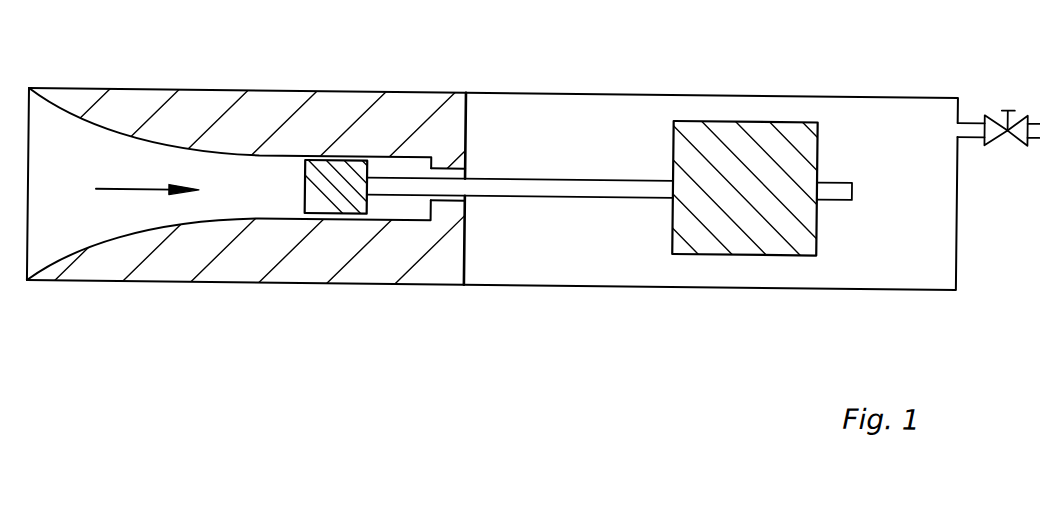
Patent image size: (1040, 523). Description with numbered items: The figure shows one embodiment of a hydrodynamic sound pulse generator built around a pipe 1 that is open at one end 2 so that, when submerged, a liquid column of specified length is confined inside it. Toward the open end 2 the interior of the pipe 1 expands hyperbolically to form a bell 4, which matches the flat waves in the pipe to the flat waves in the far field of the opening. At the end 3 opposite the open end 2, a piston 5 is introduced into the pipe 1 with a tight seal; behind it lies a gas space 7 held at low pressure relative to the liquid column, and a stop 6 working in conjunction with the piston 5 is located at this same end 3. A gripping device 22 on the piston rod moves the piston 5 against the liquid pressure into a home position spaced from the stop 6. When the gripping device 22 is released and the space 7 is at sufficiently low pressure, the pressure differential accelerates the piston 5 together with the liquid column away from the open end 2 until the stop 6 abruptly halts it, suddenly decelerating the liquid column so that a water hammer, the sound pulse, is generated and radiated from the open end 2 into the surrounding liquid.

The pipe 1 is at (266, 101).
The open end of the pipe 2 is at (38, 108).
The end of the pipe opposite the open end 3 is at (414, 219).
The bell 4 is at (137, 229).
The piston 5 is at (321, 194).
The stop 6 is at (444, 208).
The gas space 7 is at (565, 112).
The gripping device 22 is at (699, 229).